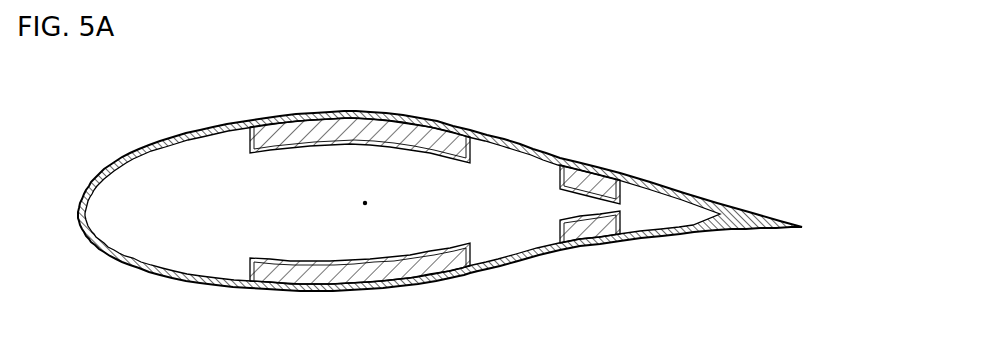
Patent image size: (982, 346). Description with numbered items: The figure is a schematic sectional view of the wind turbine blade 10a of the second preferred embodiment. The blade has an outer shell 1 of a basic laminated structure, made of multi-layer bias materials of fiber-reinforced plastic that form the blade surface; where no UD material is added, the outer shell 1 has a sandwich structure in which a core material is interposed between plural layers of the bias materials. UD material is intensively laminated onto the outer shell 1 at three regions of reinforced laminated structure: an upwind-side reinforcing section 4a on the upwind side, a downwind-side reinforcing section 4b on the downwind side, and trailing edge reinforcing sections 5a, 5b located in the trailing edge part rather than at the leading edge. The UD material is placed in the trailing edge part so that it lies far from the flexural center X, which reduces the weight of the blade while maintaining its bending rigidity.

The wind turbine blade 10a is at (178, 66).
The outer shell 1 is at (497, 268).
The upwind-side reinforcing section 4a is at (315, 280).
The downwind-side reinforcing section 4b is at (425, 136).
The trailing edge reinforcing section 5a is at (590, 245).
The trailing edge reinforcing section 5b is at (592, 180).
The flexural center X is at (369, 193).